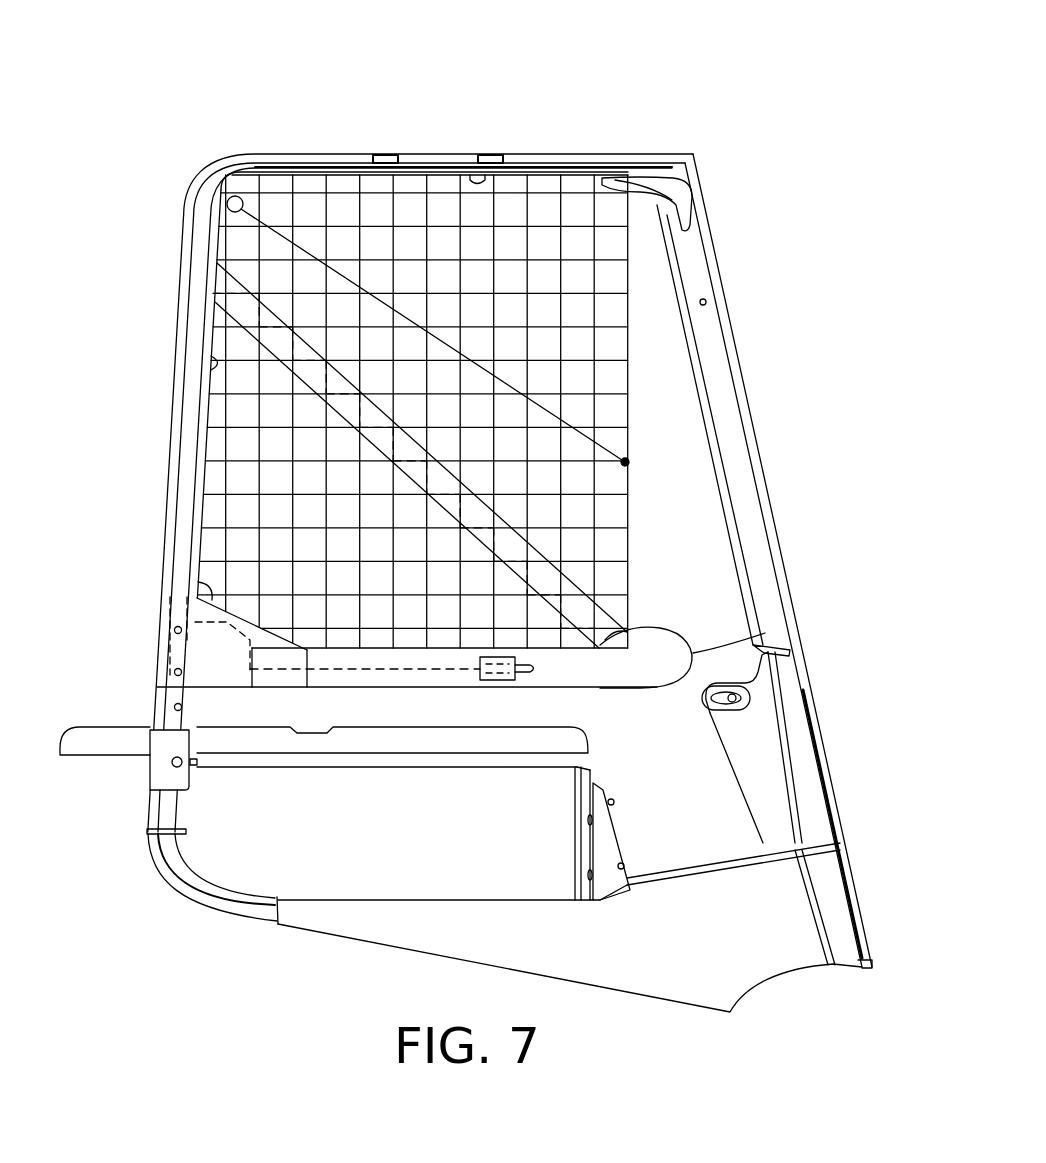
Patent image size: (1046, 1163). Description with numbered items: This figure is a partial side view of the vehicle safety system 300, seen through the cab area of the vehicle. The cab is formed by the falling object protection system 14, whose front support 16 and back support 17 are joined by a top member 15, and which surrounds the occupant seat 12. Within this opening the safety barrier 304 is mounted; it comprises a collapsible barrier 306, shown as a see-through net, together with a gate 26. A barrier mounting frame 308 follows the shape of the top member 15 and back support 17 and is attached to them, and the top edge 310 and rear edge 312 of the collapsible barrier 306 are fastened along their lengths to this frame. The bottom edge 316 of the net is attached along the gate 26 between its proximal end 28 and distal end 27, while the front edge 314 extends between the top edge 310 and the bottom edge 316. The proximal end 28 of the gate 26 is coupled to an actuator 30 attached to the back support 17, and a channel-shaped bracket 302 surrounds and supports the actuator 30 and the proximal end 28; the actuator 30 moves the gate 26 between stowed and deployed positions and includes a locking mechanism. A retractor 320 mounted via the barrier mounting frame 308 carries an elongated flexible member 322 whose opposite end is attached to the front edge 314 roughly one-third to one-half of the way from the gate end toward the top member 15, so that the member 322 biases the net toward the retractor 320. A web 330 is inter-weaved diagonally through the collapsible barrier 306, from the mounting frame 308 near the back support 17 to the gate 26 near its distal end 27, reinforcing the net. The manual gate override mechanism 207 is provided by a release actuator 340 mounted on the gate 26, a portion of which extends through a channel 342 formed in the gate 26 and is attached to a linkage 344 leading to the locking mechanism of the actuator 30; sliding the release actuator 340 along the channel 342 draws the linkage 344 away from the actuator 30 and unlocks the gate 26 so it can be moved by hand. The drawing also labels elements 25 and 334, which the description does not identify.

The vehicle safety system 300 is at (742, 96).
The falling object protection system 14 is at (446, 125).
The top member 15 is at (353, 158).
The front support 16 is at (716, 258).
The back support 17 is at (176, 413).
The B-pillar mounting 25 is at (763, 640).
The gate 26 is at (628, 662).
The distal end 27 is at (665, 690).
The proximal end 28 is at (270, 682).
The actuator 30 is at (193, 656).
The manual gate override mechanism 207 is at (462, 700).
The occupant seat 12 is at (475, 745).
The bracket 302 is at (208, 594).
The safety barrier 304 is at (660, 416).
The collapsible barrier 306 is at (270, 525).
The barrier mounting frame 308 is at (545, 167).
The top edge 310 is at (479, 173).
The rear edge 312 is at (212, 357).
The front edge 314 is at (640, 343).
The bottom edge 316 is at (343, 650).
The retractor 320 is at (252, 172).
The elongated flexible member 322 is at (208, 283).
The web 330 is at (578, 577).
The bar end 334 is at (628, 628).
The release actuator 340 is at (486, 682).
The channel 342 is at (532, 676).
The linkage 344 is at (415, 670).